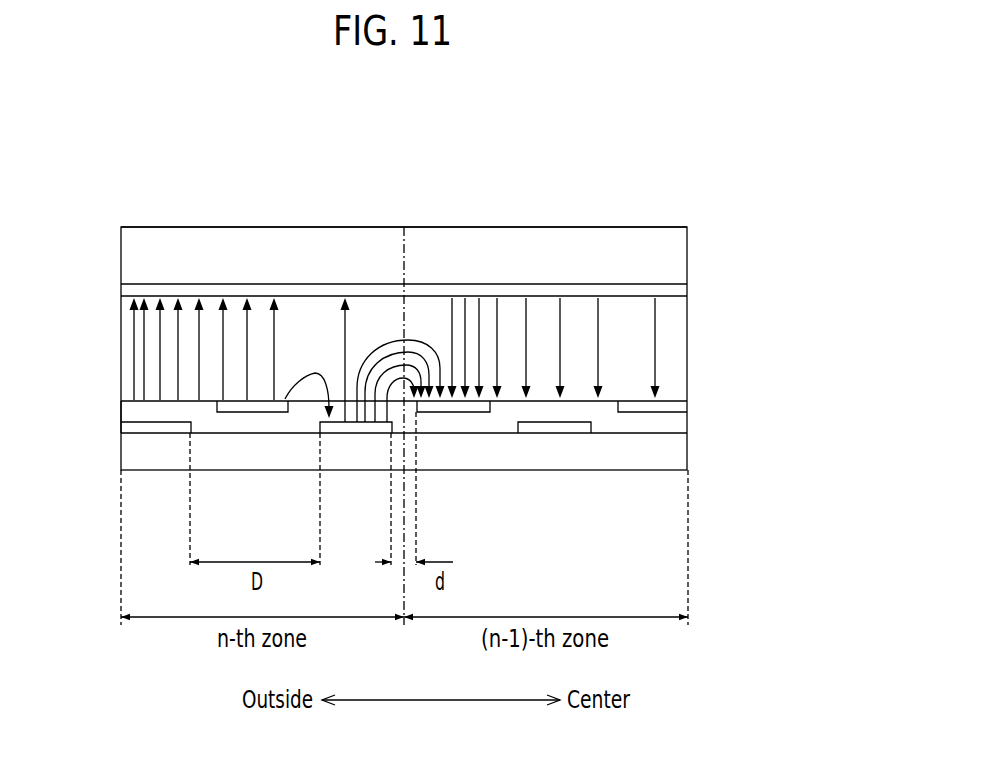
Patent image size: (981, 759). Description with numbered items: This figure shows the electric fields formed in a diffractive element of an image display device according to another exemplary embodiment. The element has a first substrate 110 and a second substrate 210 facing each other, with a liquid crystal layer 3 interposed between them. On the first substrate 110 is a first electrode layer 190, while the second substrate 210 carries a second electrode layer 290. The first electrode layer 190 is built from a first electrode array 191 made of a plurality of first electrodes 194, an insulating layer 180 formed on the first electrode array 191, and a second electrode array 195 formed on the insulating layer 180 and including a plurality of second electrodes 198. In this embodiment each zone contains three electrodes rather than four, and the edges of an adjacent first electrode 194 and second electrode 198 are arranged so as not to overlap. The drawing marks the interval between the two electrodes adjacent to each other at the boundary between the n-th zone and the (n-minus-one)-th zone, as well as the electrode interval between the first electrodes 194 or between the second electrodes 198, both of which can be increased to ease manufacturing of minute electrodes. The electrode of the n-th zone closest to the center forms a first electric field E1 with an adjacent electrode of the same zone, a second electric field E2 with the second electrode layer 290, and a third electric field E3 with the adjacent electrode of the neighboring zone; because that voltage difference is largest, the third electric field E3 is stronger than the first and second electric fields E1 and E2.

The first substrate 110 is at (585, 455).
The insulating layer 180 is at (490, 427).
The first electrode layer 190 is at (697, 403).
The first electrode array 191 is at (110, 432).
The first electrode 194 is at (150, 428).
The second electrode array 195 is at (110, 407).
The second electrode 198 is at (252, 407).
The second substrate 210 is at (574, 244).
The second electrode layer 290 is at (128, 294).
The liquid crystal layer 3 is at (697, 298).
The first electric field E1 is at (303, 372).
The second electric field E2 is at (345, 331).
The third electric field E3 is at (420, 340).